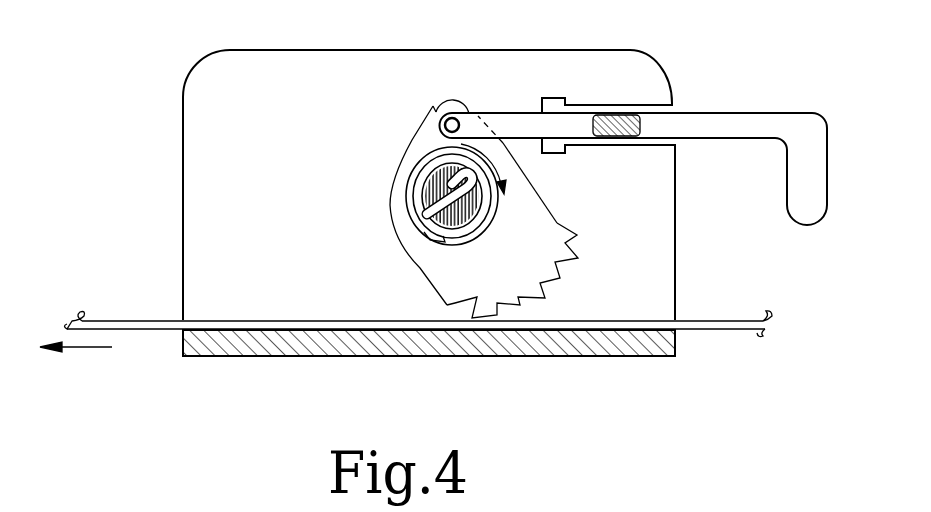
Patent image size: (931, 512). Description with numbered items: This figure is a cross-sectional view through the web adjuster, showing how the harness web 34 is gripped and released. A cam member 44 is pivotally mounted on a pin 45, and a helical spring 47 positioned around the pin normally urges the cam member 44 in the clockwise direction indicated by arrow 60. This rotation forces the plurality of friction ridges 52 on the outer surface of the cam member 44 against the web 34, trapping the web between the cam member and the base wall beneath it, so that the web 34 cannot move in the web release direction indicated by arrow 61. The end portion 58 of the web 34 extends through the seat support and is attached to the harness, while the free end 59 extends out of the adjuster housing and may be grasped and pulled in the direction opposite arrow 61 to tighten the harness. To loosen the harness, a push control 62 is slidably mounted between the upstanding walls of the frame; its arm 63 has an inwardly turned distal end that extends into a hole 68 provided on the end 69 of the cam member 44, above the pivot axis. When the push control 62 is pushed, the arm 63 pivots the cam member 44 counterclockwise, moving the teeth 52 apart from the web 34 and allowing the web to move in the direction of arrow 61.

The web 34 is at (700, 334).
The cam member 44 is at (428, 262).
The pin 45 is at (432, 210).
The helical spring 47 is at (424, 200).
The friction ridges 52 is at (447, 305).
The end portion 58 is at (96, 320).
The free end 59 is at (726, 321).
The arrow 60 is at (430, 140).
The arrow 61 is at (97, 347).
The push control 62 is at (769, 116).
The arm 63 is at (452, 120).
The hole 68 is at (433, 106).
The end 69 is at (560, 227).